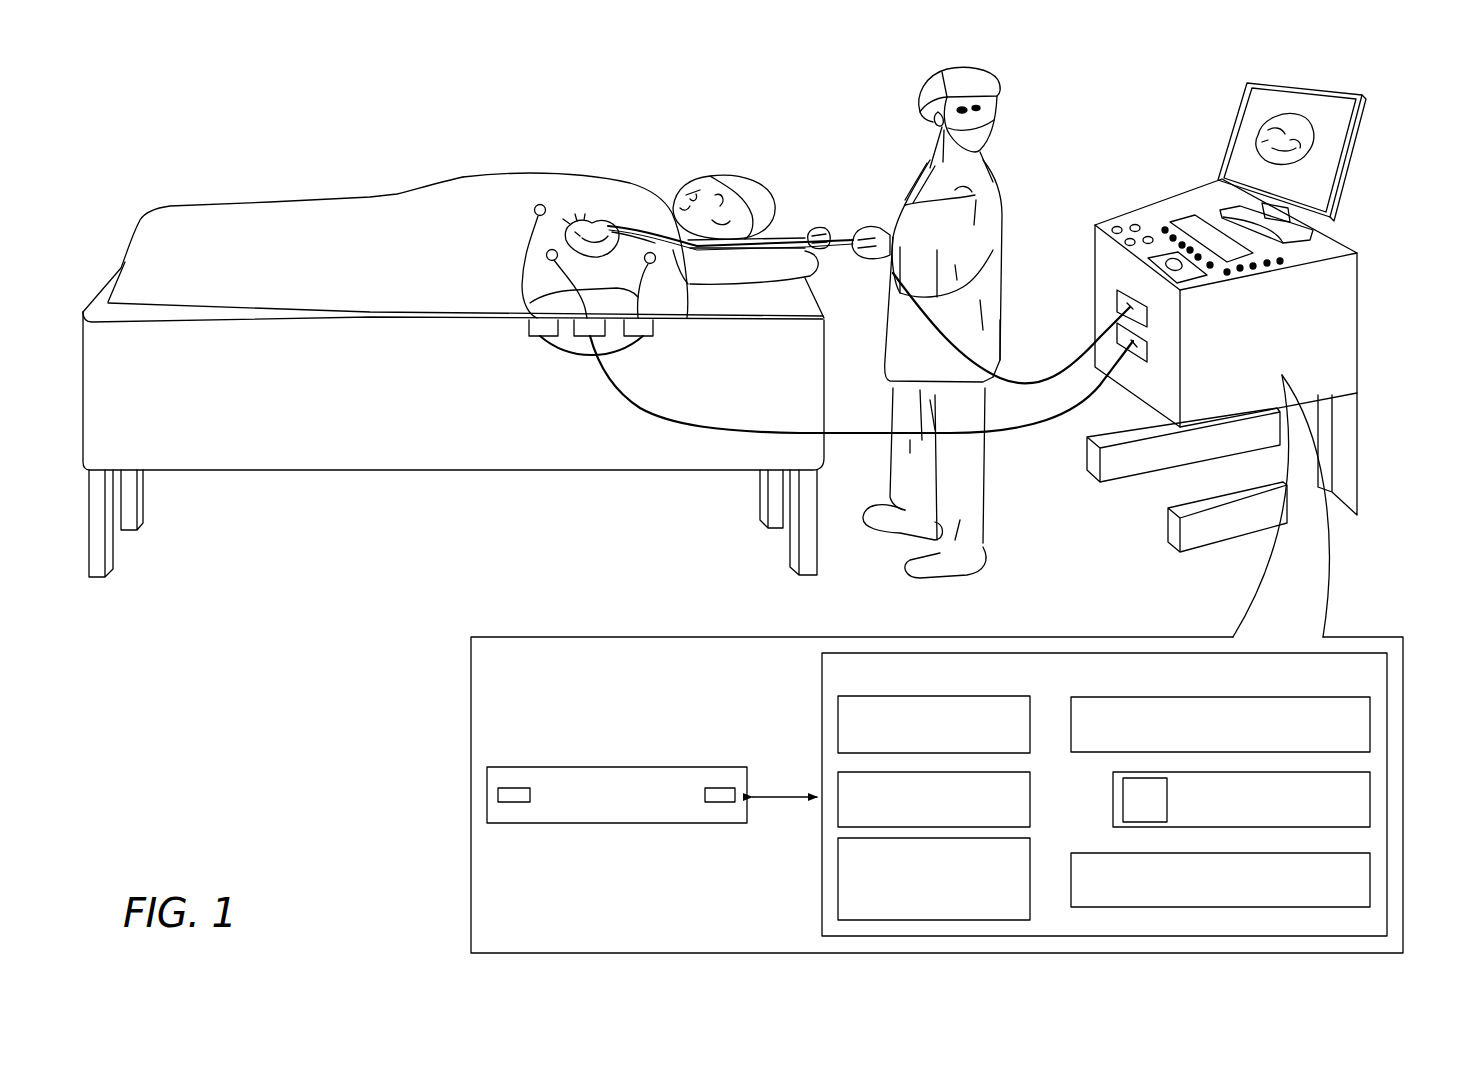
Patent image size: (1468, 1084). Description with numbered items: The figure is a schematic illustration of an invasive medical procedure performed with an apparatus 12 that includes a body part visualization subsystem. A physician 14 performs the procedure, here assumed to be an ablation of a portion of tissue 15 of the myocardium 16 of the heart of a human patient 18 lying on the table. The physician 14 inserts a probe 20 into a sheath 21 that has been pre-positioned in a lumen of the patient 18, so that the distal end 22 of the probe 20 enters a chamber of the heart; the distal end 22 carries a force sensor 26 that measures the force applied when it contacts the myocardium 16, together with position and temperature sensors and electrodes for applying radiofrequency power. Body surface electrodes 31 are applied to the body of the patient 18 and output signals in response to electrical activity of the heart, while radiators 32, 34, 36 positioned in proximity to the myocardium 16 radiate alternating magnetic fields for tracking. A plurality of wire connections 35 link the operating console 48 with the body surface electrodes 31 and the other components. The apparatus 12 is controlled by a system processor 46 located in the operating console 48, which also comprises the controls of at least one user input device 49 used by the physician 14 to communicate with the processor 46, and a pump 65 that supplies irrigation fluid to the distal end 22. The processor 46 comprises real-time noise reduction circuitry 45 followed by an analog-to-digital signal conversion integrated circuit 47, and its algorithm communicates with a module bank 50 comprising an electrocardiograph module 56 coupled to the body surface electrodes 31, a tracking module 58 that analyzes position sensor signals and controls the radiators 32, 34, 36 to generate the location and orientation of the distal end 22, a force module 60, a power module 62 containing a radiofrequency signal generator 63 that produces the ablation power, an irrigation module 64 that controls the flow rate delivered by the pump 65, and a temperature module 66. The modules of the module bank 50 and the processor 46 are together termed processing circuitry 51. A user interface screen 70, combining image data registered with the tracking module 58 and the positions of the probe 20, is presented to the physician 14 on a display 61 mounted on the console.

The apparatus 12 is at (1093, 100).
The physician 14 is at (918, 106).
The tissue 15 is at (580, 150).
The myocardium 16 is at (588, 222).
The patient 18 is at (405, 184).
The probe 20 is at (778, 218).
The sheath 21 is at (633, 220).
The distal end 22 is at (622, 150).
The force sensor 26 is at (742, 176).
The body surface electrodes 31 is at (540, 204).
The radiator 32 is at (527, 326).
The radiator 34 is at (573, 350).
The wire connections 35 is at (530, 303).
The radiator 36 is at (656, 338).
The real-time noise reduction circuitry 45 is at (516, 788).
The system processor 46 is at (617, 766).
The analog-to-digital signal conversion integrated circuit 47 is at (722, 788).
The operating console 48 is at (1190, 249).
The user input device 49 is at (1104, 224).
The module bank 50 is at (822, 654).
The processing circuitry 51 is at (1378, 612).
The electrocardiograph (ECG) module 56 is at (838, 715).
The tracking module 58 is at (1372, 722).
The force module 60 is at (838, 826).
The display 61 is at (1317, 163).
The power module 62 is at (1257, 799).
The radiofrequency (RF) signal generator 63 is at (1122, 800).
The irrigation module 64 is at (838, 873).
The pump 65 is at (1152, 212).
The temperature module 66 is at (1372, 878).
The user interface screen 70 is at (1306, 124).